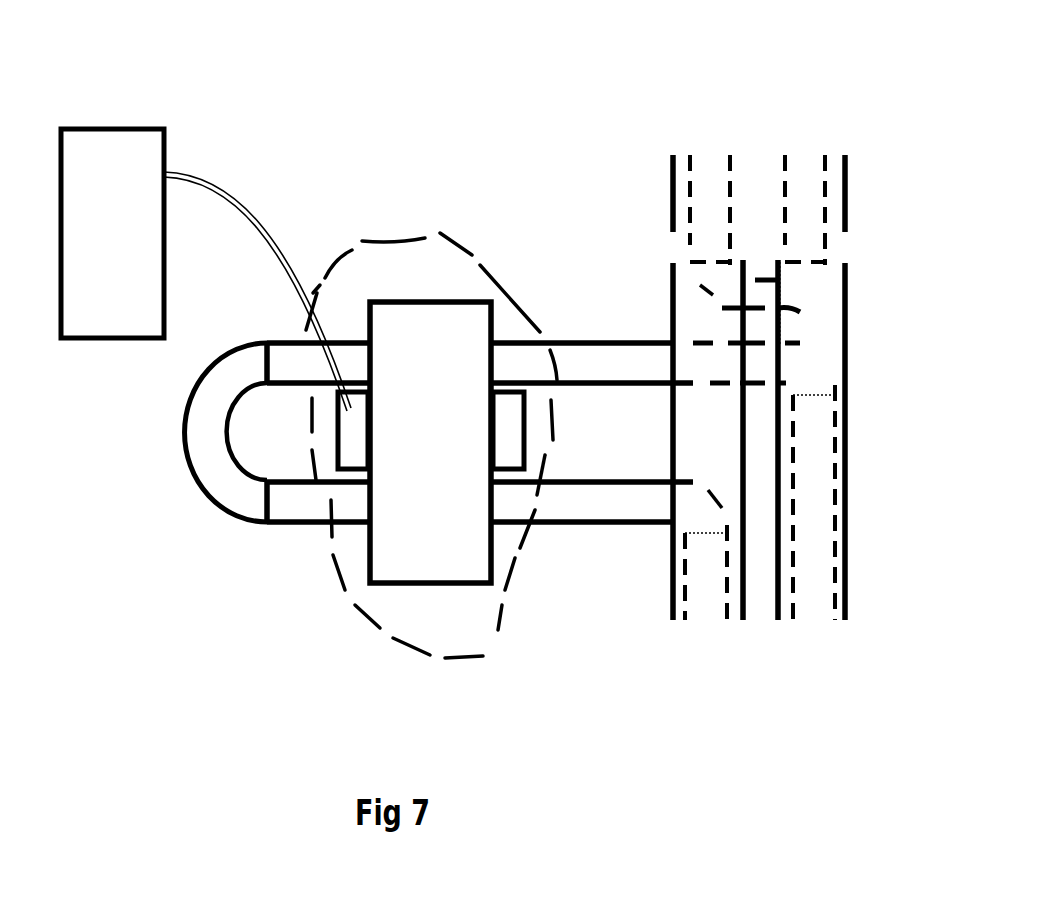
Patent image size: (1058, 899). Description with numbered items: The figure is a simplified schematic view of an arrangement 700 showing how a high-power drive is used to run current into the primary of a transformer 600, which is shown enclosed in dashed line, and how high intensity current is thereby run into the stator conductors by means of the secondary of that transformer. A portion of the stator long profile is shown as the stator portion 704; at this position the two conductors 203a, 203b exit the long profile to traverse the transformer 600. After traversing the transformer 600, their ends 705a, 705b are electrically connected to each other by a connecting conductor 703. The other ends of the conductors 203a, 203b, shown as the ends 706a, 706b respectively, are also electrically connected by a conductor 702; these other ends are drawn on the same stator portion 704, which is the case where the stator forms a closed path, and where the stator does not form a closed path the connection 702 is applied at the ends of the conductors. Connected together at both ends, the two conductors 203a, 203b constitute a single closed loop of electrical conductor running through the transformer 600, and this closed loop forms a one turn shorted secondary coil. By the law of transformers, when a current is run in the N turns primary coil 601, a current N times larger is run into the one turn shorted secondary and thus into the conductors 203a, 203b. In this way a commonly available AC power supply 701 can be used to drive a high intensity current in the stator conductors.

The slicer assembly 700 is at (505, 133).
The AC power supply 701 is at (122, 172).
The connecting conductor 702 is at (798, 278).
The connecting conductor 703 is at (199, 438).
The portion of the stator long profile 704 is at (667, 306).
The end of conductor 203a 705a is at (289, 505).
The end of conductor 203b 705b is at (282, 357).
The other end of conductor 203a 706a is at (713, 181).
The other end of conductor 203b 706b is at (808, 179).
The transformer 600 is at (368, 621).
The primary coil 601 is at (505, 412).
The conductor 203a is at (705, 599).
The conductor 203b is at (811, 588).